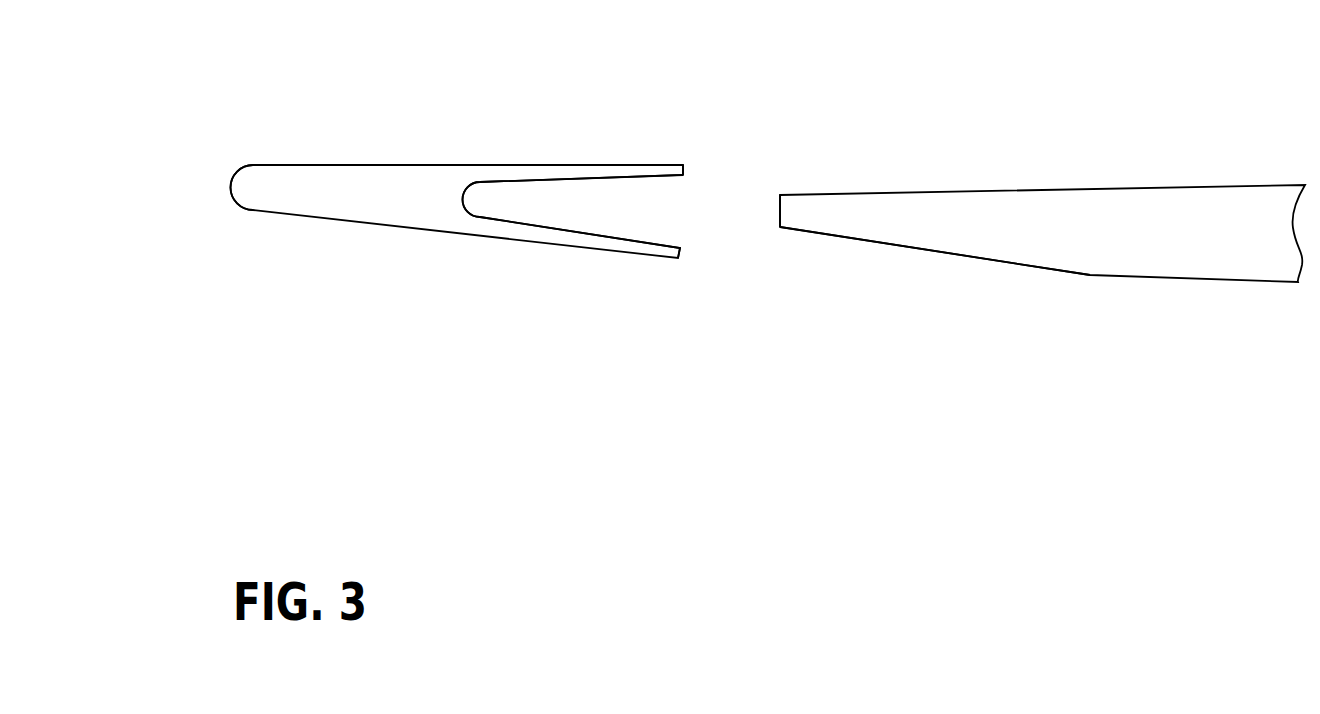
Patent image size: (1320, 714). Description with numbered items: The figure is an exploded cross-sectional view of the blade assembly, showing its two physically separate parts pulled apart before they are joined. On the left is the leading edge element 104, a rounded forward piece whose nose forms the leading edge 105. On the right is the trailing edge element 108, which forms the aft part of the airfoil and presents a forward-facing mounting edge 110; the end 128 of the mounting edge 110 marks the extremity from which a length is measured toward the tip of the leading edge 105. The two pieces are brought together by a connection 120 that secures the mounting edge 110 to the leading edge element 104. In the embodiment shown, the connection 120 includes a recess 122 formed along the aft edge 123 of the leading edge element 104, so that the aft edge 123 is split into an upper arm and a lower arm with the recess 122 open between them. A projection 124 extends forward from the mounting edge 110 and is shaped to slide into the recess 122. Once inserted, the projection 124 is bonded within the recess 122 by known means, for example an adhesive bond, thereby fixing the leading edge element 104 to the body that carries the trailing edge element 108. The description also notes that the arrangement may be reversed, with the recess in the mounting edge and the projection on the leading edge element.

The leading edge element 104 is at (380, 165).
The leading edge 105 is at (232, 188).
The trailing edge element 108 is at (1066, 192).
The mounting edge 110 is at (802, 212).
The connection 120 is at (687, 165).
The recess 122 is at (575, 205).
The aft edge 123 is at (638, 246).
The projection 124 is at (957, 228).
The end of the mounting edge 128 is at (779, 213).